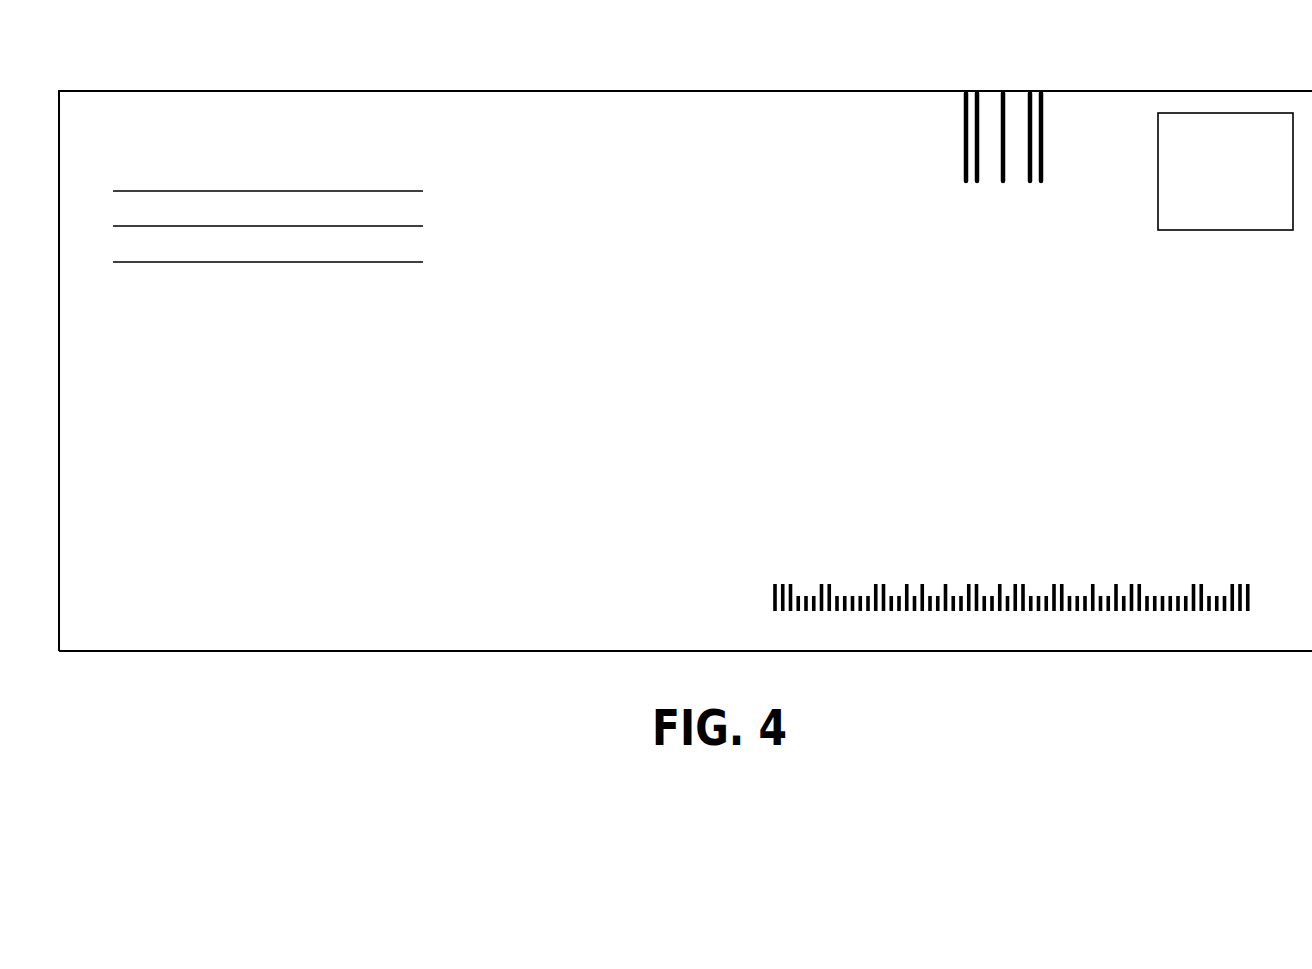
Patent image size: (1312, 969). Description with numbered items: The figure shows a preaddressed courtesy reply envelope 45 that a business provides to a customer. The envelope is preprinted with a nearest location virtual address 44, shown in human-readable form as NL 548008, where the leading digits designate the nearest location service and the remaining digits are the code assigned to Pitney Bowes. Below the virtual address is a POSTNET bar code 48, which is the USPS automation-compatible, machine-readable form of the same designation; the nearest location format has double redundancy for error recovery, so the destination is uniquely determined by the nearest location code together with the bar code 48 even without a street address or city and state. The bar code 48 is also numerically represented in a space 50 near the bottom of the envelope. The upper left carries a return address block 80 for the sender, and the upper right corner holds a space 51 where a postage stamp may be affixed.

The nearest location virtual address 44 is at (700, 420).
The envelope / mail piece 45 is at (697, 91).
The POSTNET bar code 48 is at (775, 583).
The space 50 is at (1088, 712).
The space where a postage stamp may be affixed 51 is at (1207, 113).
The return address block 80 is at (429, 224).